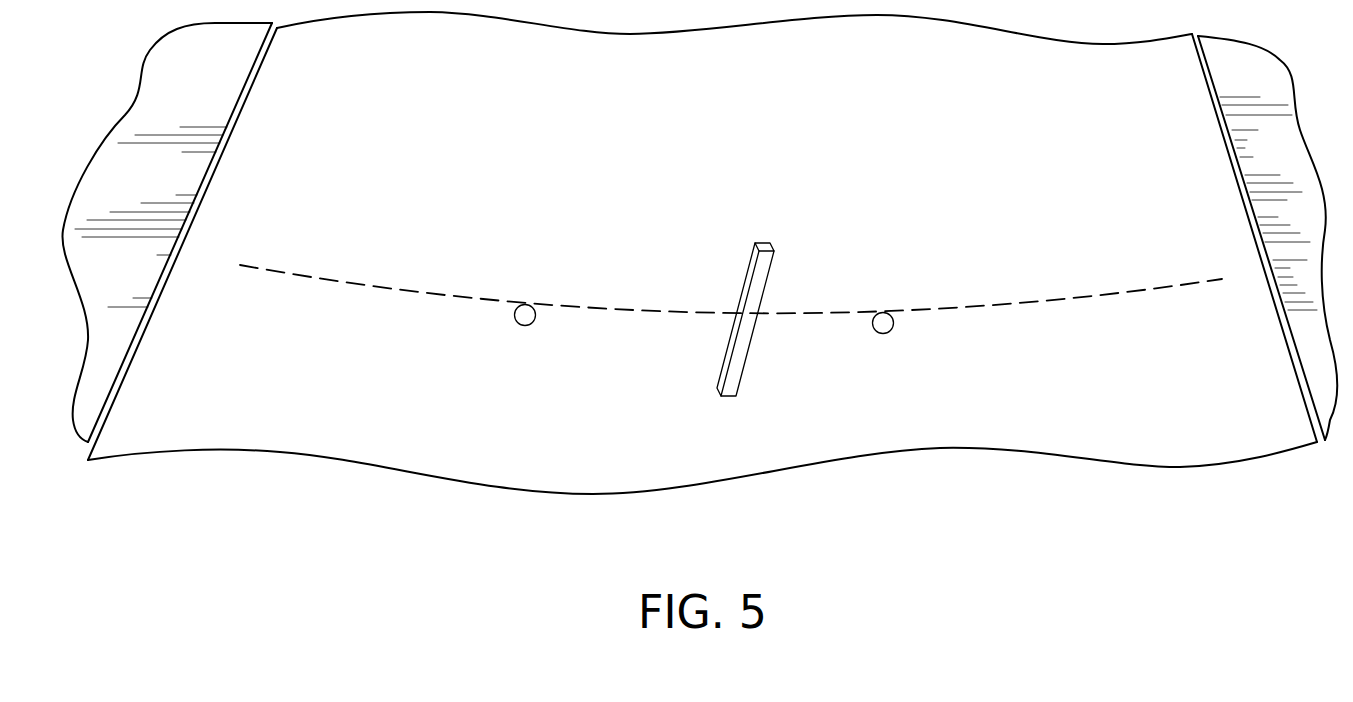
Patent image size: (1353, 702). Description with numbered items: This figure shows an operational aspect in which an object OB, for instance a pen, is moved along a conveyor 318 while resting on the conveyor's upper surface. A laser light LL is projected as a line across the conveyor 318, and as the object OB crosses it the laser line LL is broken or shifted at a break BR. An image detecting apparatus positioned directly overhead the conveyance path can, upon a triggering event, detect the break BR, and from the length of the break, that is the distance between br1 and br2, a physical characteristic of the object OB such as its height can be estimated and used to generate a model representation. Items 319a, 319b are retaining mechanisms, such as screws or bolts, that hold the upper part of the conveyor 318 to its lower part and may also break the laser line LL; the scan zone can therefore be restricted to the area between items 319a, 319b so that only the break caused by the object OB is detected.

The conveyor 318 is at (530, 208).
The item (retaining mechanism) 319a is at (515, 320).
The item (retaining mechanism) 319b is at (893, 325).
The laser light LL is at (1117, 292).
The break BR is at (715, 303).
The object OB is at (762, 278).
The first break endpoint br1 is at (736, 313).
The second break endpoint br2 is at (687, 313).